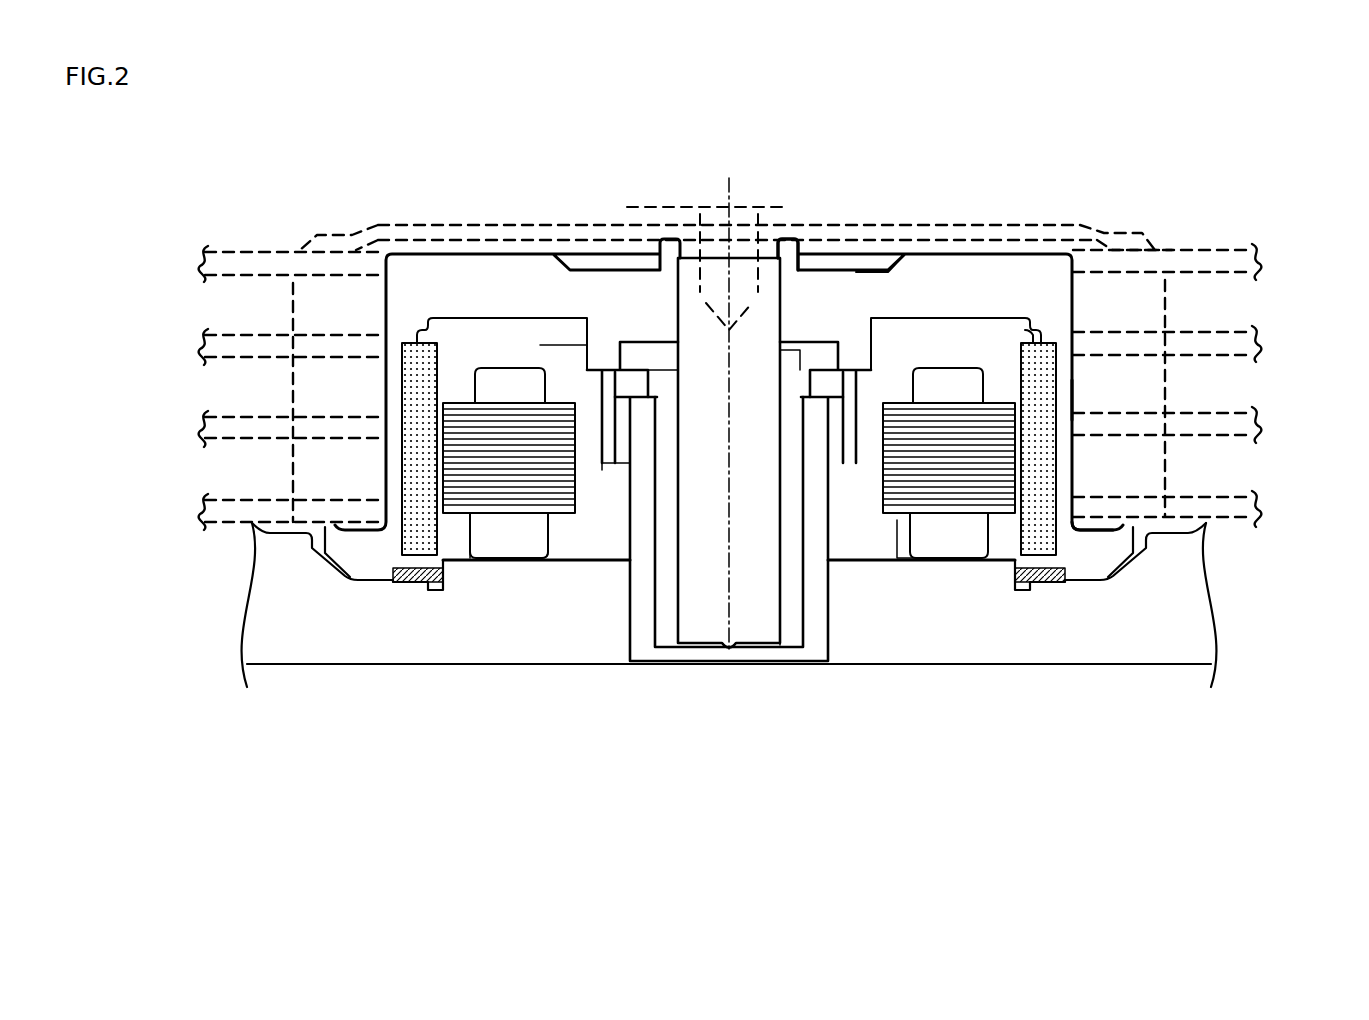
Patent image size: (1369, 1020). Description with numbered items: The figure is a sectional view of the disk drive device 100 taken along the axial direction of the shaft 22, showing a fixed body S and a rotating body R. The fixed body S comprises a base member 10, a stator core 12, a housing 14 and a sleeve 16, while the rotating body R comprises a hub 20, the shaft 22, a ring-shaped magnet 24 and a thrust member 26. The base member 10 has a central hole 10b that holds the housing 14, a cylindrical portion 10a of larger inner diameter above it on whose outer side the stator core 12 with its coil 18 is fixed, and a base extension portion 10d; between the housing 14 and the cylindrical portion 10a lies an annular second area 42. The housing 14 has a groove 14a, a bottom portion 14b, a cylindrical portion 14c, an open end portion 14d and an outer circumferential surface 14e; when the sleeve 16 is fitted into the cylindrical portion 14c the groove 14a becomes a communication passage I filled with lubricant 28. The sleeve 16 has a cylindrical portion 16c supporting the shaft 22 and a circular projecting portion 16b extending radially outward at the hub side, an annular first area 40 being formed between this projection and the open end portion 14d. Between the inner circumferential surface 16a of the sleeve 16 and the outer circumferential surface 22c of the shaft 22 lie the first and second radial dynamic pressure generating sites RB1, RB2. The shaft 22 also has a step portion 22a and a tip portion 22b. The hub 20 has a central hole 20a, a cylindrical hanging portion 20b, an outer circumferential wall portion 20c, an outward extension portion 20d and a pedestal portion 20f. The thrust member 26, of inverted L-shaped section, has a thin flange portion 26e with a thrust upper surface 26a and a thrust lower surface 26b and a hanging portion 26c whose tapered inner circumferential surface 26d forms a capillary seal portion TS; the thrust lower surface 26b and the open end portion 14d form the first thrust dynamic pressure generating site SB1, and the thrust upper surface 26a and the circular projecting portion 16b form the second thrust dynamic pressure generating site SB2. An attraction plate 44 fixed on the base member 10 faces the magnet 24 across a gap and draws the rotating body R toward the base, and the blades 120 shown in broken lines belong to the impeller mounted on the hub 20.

The base member 10 is at (280, 652).
The cylindrical portion 10a is at (459, 254).
The central hole 10b is at (636, 664).
The base extension portion 10d is at (990, 563).
The stator core 12 is at (457, 400).
The housing 14 is at (633, 562).
The groove 14a is at (835, 470).
The bottom portion 14b is at (829, 642).
The cylindrical portion 14c is at (631, 663).
The open end portion 14d is at (858, 600).
The outer circumferential surface 14e is at (604, 466).
The sleeve 16 is at (657, 600).
The inner circumferential surface 16a is at (686, 648).
The circular projecting portion 16b is at (643, 340).
The cylindrical portion 16c is at (806, 602).
The coil 18 is at (487, 545).
The hub 20 is at (860, 305).
The central hole 20a is at (753, 237).
The cylindrical hanging portion 20b is at (860, 412).
The outer circumferential wall portion 20c is at (1072, 403).
The outward extension portion 20d is at (1117, 526).
The pedestal portion 20f is at (1042, 342).
The shaft 22 is at (781, 640).
The step portion 22a is at (781, 292).
The tip portion 22b is at (731, 648).
The outer circumferential surface 22c is at (678, 340).
The magnet 24 is at (1027, 367).
The thrust member 26 is at (930, 562).
The thrust upper surface 26a is at (580, 345).
The thrust lower surface 26b is at (862, 410).
The hanging portion 26c is at (470, 566).
The inner circumferential surface 26d is at (560, 320).
The flange portion 26e is at (520, 318).
The lubricant 28 is at (898, 560).
The first area 40 is at (636, 342).
The second area 42 is at (572, 548).
The attraction plate 44 is at (422, 588).
The disk drive device 100 is at (746, 859).
The impeller blades 120 is at (1220, 262).
The rotating body R is at (440, 256).
The fixed body S is at (340, 652).
The communication passage I is at (657, 655).
The capillary seal portion TS is at (890, 562).
The first thrust dynamic pressure generating site SB1 is at (608, 470).
The second thrust dynamic pressure generating site SB2 is at (815, 342).
The first radial dynamic pressure generating site RB1 is at (790, 646).
The second radial dynamic pressure generating site RB2 is at (777, 368).